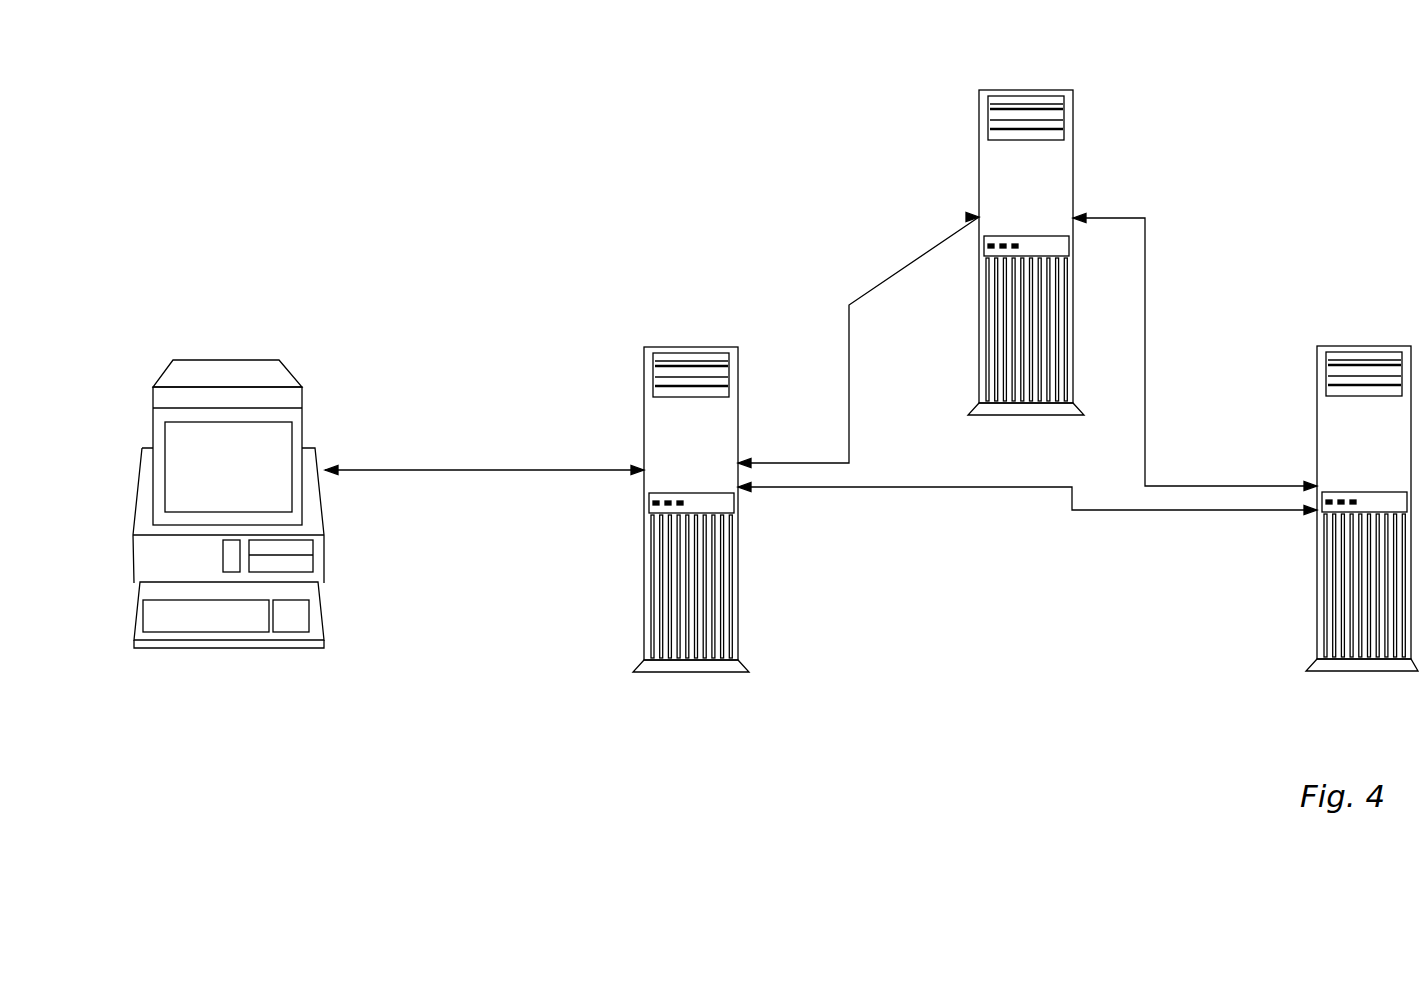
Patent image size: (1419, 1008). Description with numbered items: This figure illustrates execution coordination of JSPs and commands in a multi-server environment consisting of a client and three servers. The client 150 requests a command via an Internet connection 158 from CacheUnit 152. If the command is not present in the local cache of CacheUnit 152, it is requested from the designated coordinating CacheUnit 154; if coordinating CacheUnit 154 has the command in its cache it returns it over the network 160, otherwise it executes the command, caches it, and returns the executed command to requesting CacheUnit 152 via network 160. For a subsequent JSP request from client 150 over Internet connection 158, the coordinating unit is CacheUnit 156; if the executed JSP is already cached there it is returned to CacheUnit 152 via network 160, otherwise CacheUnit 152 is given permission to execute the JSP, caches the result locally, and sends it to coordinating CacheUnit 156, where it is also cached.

The client 150 is at (278, 358).
The CacheUnit 152 is at (650, 347).
The coordinating CacheUnit 154 is at (980, 90).
The coordinating CacheUnit 156 is at (1398, 346).
The Internet connection 158 is at (498, 471).
The network 160 is at (947, 233).